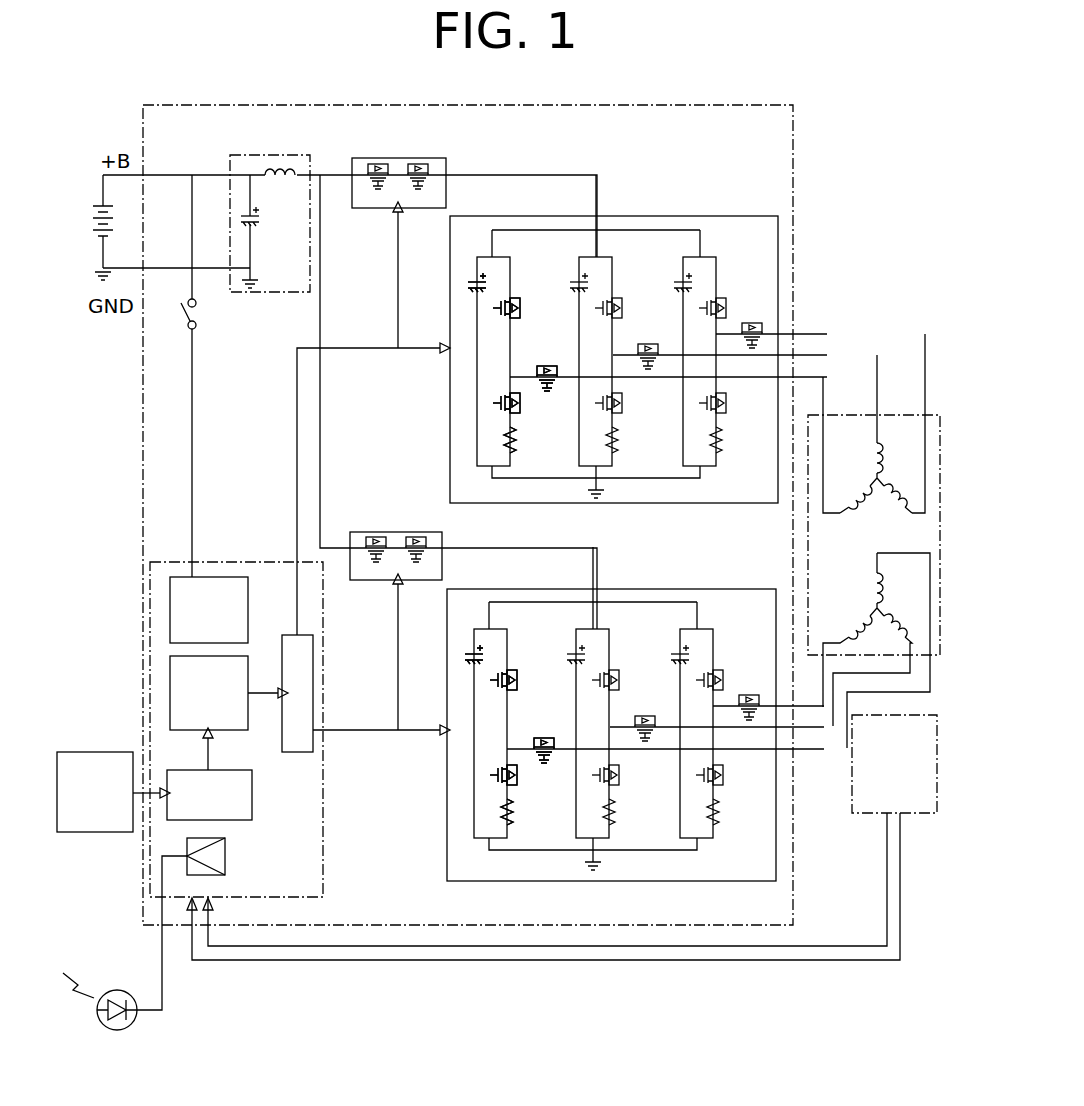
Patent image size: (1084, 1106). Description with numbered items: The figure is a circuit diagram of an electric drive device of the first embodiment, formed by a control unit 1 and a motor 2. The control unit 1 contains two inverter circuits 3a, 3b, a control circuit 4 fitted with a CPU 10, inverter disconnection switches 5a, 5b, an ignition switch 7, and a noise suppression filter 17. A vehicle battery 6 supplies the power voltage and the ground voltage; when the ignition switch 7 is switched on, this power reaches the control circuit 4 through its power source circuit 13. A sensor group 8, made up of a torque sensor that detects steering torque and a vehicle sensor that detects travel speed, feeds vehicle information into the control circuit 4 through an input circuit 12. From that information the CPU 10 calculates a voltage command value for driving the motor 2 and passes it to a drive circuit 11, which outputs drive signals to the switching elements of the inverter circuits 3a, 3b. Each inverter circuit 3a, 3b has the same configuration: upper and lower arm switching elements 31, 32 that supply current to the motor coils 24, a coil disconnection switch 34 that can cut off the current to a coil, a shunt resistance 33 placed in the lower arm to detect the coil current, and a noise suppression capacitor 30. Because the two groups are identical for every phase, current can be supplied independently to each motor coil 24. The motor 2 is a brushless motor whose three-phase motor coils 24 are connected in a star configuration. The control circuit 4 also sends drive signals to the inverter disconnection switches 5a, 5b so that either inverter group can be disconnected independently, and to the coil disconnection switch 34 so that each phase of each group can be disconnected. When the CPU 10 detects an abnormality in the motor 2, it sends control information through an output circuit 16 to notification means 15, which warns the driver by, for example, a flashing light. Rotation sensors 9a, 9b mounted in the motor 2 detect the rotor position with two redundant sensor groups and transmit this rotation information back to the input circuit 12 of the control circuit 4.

The control unit 1 is at (795, 148).
The motor 2 is at (875, 541).
The inverter circuit 3a is at (705, 218).
The inverter circuit 3b is at (705, 590).
The control circuit 4 is at (236, 694).
The inverter disconnection switch 5a is at (383, 158).
The inverter disconnection switch 5b is at (377, 532).
The battery 6 is at (93, 201).
The ignition switch 7 is at (204, 323).
The sensor group 8 is at (108, 838).
The rotation sensor 9a is at (892, 810).
The rotation sensor 9b is at (885, 817).
The CPU 10 is at (244, 690).
The drive circuit 11 is at (302, 762).
The input circuit 12 is at (246, 794).
The power source circuit 13 is at (246, 630).
The notification means 15 is at (111, 990).
The output circuit 16 is at (232, 862).
The noise suppression filter 17 is at (260, 158).
The motor coil 24 is at (878, 474).
The noise suppression capacitor 30 is at (468, 280).
The upper arm switching element 31 is at (518, 296).
The lower arm switching element 32 is at (518, 416).
The shunt resistance 33 is at (514, 472).
The coil disconnection switch 34 is at (538, 365).